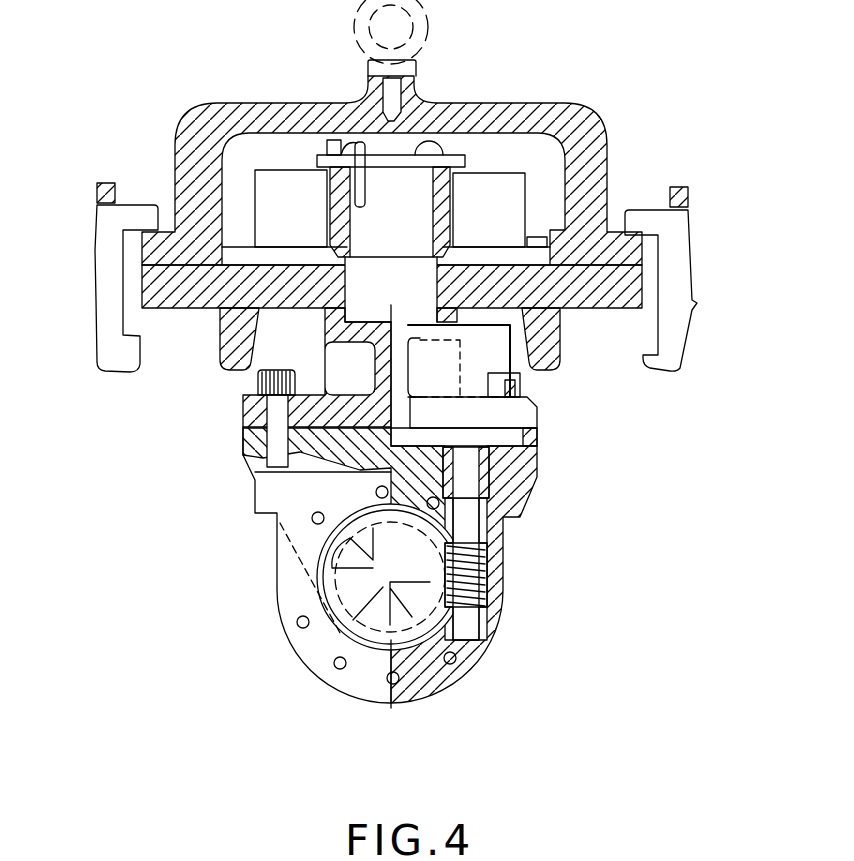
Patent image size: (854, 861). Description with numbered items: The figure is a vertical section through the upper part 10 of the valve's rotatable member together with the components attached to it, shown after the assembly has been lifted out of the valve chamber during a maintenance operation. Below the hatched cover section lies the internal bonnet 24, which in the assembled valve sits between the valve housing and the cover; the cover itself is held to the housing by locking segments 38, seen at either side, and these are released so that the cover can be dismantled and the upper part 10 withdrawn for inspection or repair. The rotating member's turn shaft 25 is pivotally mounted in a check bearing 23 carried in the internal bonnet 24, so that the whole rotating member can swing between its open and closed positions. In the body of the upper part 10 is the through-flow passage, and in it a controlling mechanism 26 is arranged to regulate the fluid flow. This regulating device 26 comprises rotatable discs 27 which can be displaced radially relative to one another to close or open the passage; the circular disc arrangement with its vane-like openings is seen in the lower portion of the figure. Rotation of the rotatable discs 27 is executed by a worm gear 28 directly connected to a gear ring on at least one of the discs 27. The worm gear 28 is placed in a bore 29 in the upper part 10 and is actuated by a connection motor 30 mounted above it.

The upper part 10 is at (537, 440).
The check bearing 23 is at (333, 277).
The internal bonnet 24 is at (183, 287).
The turn shaft 25 is at (405, 290).
The controlling mechanism 26 is at (340, 628).
The rotatable discs 27 is at (350, 536).
The worm gear 28 is at (470, 531).
The bore 29 is at (497, 487).
The connection motor 30 is at (497, 360).
The locking segments 38 is at (108, 322).